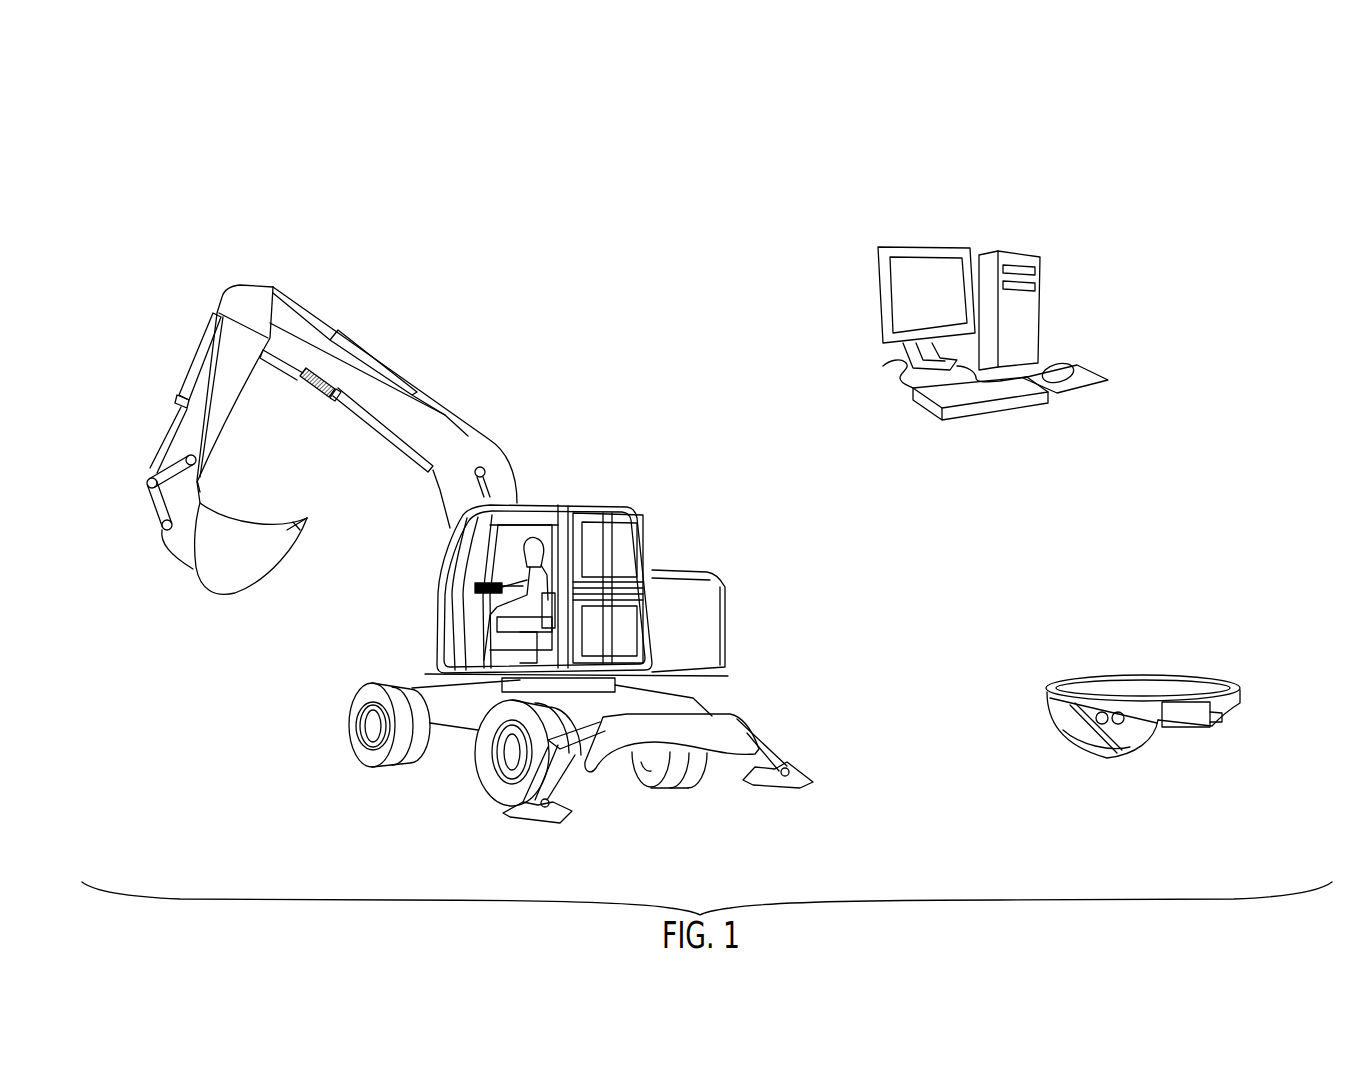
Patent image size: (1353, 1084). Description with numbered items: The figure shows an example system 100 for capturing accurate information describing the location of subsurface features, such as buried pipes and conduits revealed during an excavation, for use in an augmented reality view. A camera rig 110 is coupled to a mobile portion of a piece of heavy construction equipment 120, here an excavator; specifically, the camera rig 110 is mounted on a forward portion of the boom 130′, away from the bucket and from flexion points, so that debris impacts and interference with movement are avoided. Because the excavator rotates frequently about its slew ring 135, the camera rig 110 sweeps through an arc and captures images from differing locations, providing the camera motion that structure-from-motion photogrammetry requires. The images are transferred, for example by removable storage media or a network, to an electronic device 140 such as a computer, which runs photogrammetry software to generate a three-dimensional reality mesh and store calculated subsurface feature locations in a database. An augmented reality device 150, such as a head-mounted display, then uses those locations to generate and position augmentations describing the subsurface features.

The system 100 is at (901, 108).
The camera rig 110 is at (317, 395).
The piece of heavy construction equipment 120 is at (672, 570).
The boom 130′ is at (423, 397).
The slew ring 135 is at (670, 688).
The electronic device 140 is at (982, 253).
The augmented reality device 150 is at (1182, 675).